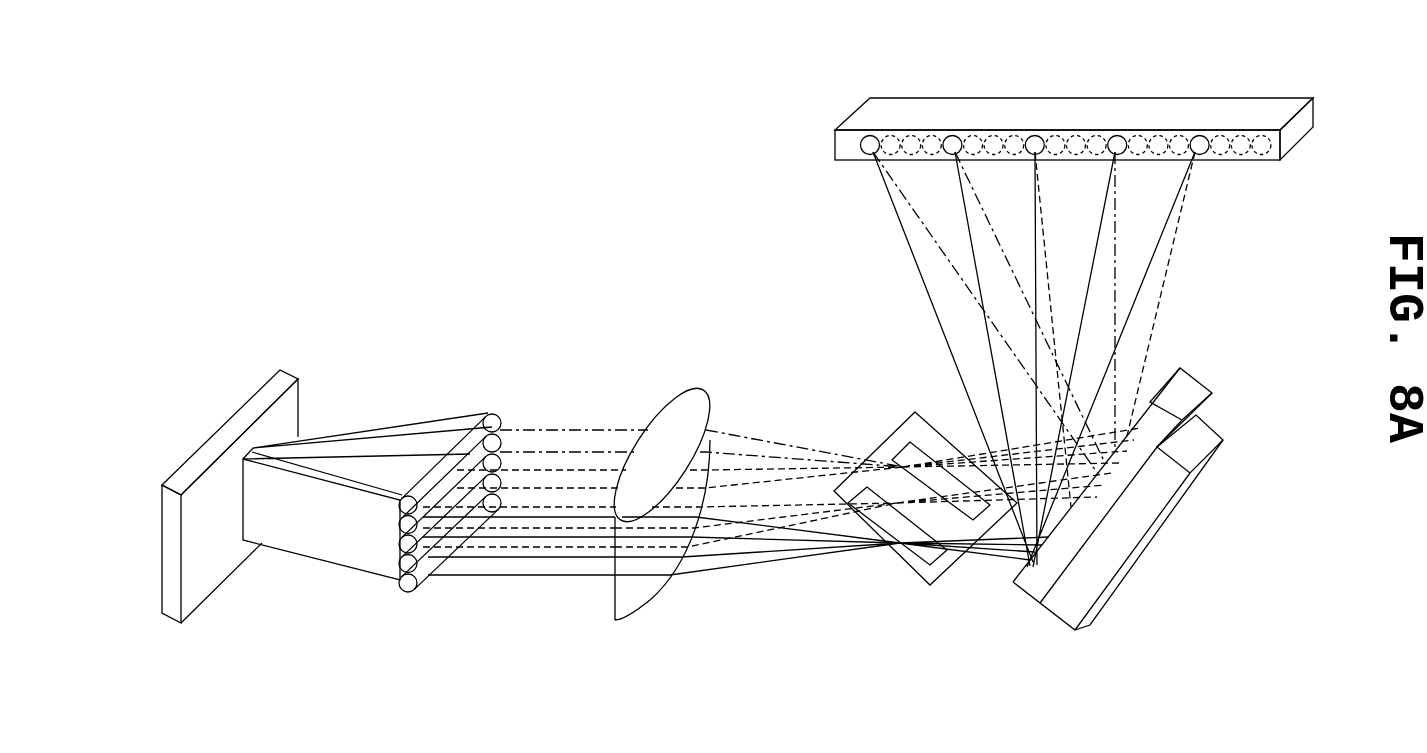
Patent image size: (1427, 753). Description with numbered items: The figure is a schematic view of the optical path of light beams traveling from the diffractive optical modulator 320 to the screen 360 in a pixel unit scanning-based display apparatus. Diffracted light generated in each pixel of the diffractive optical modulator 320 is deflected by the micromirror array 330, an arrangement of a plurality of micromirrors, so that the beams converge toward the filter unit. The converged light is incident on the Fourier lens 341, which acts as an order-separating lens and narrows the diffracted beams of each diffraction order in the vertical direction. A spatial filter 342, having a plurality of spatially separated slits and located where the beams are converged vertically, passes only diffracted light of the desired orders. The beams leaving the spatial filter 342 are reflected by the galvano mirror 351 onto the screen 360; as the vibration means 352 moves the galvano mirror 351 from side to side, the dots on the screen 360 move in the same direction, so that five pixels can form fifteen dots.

The diffractive optical modulator 320 is at (290, 376).
The micromirror array 330 is at (493, 414).
The Fourier lens 341 is at (698, 386).
The spatial filter 342 is at (905, 438).
The galvano mirror 351 is at (1200, 380).
The vibration means 352 is at (1218, 438).
The screen 360 is at (1255, 103).